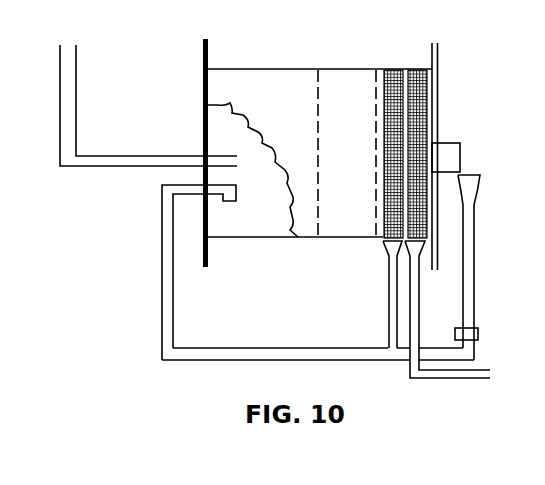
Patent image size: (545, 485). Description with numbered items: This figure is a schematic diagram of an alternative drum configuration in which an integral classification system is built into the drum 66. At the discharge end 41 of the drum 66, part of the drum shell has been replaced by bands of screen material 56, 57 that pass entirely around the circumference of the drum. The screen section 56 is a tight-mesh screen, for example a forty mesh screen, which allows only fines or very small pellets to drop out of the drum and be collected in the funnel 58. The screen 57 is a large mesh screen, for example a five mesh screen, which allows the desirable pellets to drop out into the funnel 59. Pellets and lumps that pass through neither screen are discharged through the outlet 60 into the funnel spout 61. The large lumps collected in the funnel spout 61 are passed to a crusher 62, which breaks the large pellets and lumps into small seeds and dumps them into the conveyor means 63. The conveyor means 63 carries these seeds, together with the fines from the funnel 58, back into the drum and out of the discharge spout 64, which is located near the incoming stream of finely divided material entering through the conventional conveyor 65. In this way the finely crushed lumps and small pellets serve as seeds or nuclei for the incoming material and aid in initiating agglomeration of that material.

The discharge end 41 is at (437, 108).
The tight-mesh screen section 56 is at (388, 71).
The large mesh screen 57 is at (429, 71).
The funnel 58 is at (385, 247).
The funnel 59 is at (408, 270).
The outlet 60 is at (460, 163).
The funnel spout 61 is at (478, 205).
The crusher 62 is at (479, 341).
The conveyor means 63 is at (342, 346).
The discharge spout 64 is at (253, 198).
The conventional conveyor 65 is at (208, 156).
The drum 66 is at (285, 67).